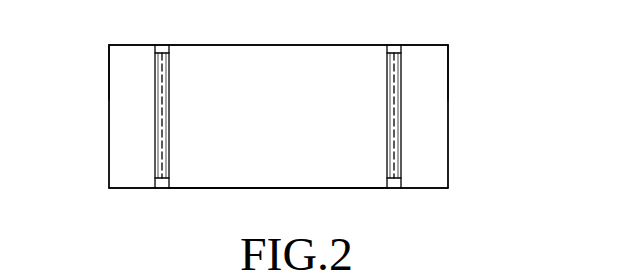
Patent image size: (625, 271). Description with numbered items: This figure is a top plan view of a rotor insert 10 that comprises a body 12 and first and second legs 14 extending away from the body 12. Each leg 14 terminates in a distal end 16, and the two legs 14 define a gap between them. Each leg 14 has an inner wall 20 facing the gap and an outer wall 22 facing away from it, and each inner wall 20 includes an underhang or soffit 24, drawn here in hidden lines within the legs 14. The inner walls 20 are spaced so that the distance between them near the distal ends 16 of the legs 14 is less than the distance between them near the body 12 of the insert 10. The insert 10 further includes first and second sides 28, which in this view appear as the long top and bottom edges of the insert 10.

The insert 10 is at (196, 202).
The body 12 is at (278, 163).
The legs 14 is at (109, 130).
The distal ends 16 is at (155, 164).
The inner wall 20 is at (172, 137).
The outer wall 22 is at (124, 83).
The soffit 24 is at (168, 99).
The sides 28 is at (128, 45).